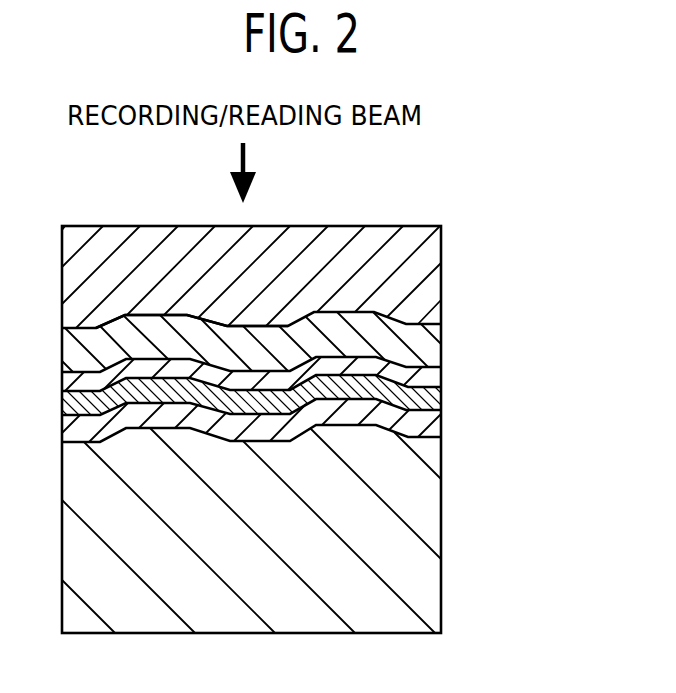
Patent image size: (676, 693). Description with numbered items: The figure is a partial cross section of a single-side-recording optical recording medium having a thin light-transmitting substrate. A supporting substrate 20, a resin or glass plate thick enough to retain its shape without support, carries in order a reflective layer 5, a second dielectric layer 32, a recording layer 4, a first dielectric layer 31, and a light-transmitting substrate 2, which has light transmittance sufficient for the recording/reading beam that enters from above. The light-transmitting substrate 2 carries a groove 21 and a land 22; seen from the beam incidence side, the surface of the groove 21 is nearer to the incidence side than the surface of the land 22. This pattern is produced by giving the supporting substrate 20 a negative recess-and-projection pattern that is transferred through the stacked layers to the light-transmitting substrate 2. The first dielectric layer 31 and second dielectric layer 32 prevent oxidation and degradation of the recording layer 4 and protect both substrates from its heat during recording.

The light-transmitting substrate 2 is at (441, 264).
The first dielectric layer 31 is at (441, 342).
The recording layer 4 is at (441, 374).
The second dielectric layer 32 is at (441, 402).
The reflective layer 5 is at (441, 418).
The supporting substrate 20 is at (441, 472).
The groove 21 is at (172, 313).
The land 22 is at (250, 322).